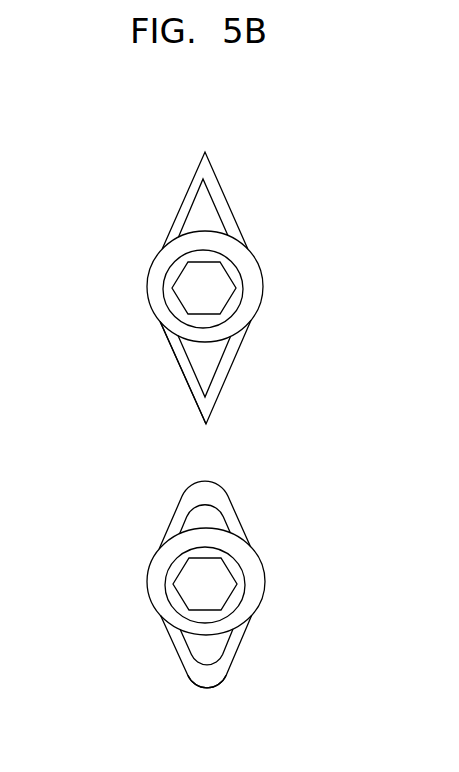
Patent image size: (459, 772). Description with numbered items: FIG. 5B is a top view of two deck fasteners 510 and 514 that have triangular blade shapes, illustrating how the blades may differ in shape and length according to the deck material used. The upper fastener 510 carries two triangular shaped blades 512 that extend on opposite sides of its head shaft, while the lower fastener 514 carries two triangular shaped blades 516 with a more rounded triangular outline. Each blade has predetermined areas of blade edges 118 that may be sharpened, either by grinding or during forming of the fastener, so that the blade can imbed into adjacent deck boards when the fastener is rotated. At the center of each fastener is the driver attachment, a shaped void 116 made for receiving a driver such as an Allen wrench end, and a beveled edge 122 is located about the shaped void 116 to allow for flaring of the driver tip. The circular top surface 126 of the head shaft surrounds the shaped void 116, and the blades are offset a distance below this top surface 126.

The fastener 510 is at (117, 225).
The triangular shaped blades 512 is at (238, 208).
The fastener 514 is at (257, 487).
The triangular shaped blades 516 is at (162, 532).
The blade edges 118 is at (182, 368).
The shaped void 116 is at (208, 282).
The beveled edge 122 is at (227, 266).
The top surface 126 is at (242, 315).